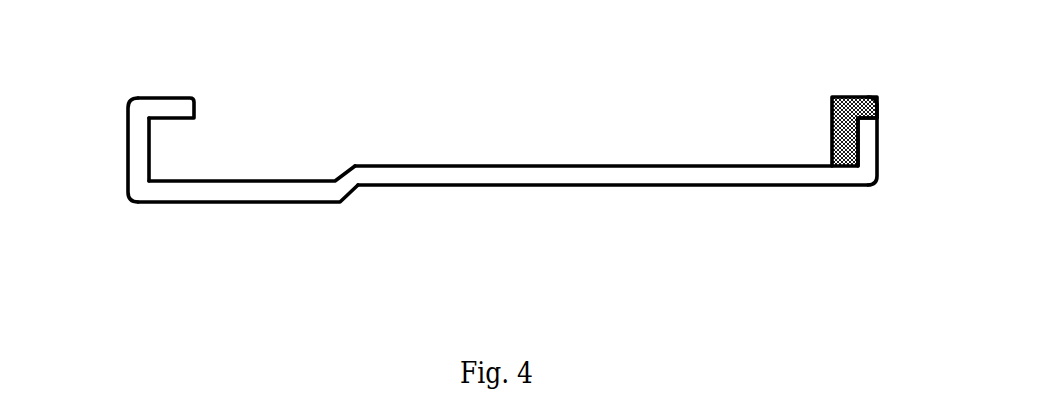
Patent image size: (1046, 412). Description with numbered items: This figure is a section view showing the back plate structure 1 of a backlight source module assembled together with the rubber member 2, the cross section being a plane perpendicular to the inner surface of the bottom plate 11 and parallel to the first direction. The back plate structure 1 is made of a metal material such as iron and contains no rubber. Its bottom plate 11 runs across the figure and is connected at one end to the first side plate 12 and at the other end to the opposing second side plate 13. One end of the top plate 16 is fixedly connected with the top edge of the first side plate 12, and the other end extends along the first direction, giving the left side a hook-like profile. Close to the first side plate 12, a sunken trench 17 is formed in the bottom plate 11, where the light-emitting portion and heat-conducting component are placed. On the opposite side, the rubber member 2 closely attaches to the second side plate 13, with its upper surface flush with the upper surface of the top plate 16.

The back plate structure 1 is at (501, 160).
The rubber member 2 is at (832, 115).
The bottom plate 11 is at (453, 173).
The first side plate 12 is at (138, 147).
The second side plate 13 is at (868, 152).
The top plate 16 is at (170, 105).
The sunken trench 17 is at (240, 200).